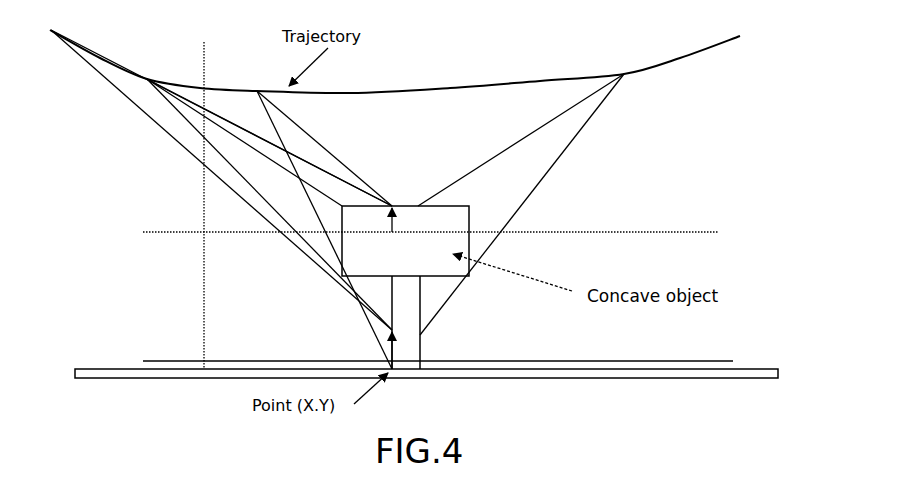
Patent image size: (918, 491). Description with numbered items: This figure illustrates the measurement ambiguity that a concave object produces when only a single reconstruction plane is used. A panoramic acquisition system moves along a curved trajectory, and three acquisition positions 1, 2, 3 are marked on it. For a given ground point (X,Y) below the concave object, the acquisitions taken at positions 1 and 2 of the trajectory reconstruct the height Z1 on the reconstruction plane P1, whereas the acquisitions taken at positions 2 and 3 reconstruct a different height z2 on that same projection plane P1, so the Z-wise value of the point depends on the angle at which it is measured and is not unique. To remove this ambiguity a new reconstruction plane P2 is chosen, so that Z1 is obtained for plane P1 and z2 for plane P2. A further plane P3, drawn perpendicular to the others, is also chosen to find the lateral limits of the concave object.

The position of the trajectory 1 is at (221, 172).
The position of the trajectory 2 is at (266, 190).
The position of the trajectory 3 is at (318, 217).
The reconstruction plane P1 is at (438, 348).
The reconstruction plane P2 is at (429, 219).
The plane P3 is at (201, 194).
The reconstructed height z1 Z1 is at (404, 342).
The reconstructed height z2 is at (398, 207).